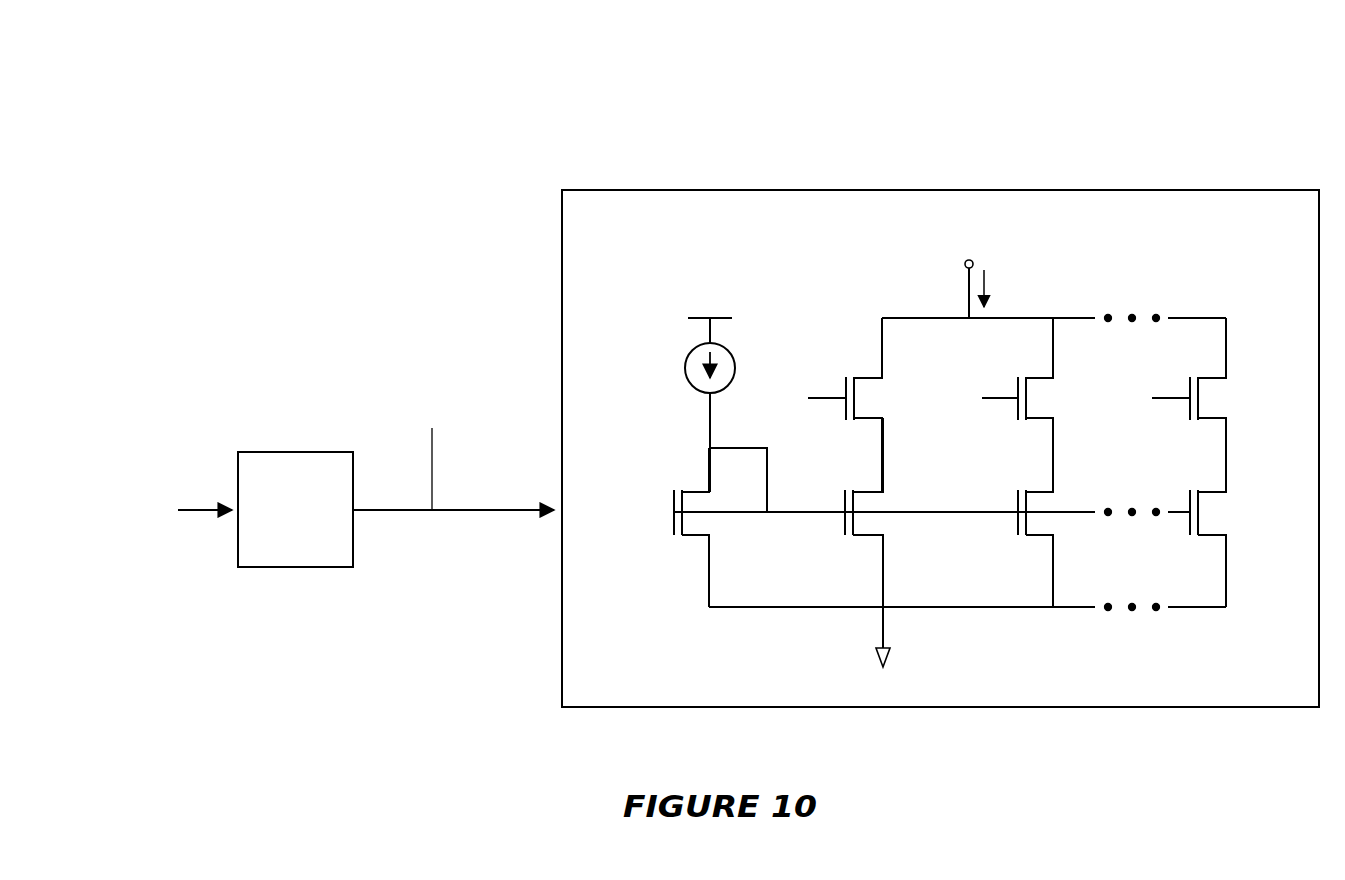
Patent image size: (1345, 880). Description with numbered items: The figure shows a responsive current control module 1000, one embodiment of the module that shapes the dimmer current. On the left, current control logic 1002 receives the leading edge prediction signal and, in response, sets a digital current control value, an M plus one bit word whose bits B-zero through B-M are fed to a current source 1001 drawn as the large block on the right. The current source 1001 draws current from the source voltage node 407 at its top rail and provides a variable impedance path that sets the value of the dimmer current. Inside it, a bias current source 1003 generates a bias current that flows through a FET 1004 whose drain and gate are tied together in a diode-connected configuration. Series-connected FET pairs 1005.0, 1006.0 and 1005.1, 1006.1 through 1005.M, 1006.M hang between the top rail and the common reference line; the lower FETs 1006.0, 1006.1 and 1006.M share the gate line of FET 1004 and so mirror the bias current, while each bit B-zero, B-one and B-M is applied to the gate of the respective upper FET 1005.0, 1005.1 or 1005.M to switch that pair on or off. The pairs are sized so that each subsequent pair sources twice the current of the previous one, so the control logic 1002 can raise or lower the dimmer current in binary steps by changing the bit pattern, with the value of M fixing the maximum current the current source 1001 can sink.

The responsive current control module 1000 is at (1149, 155).
The current source 1001 is at (562, 255).
The current control logic 1002 is at (295, 509).
The bias current source 1003 is at (686, 356).
The FET 1004 is at (672, 500).
The FET 1005.0 is at (912, 400).
The FET 1005.1 is at (1042, 415).
The FET 1005.M is at (1211, 415).
The FET 1006.0 is at (860, 490).
The FET 1006.1 is at (1035, 490).
The FET 1006.M is at (1205, 490).
The source voltage node 407 is at (965, 262).